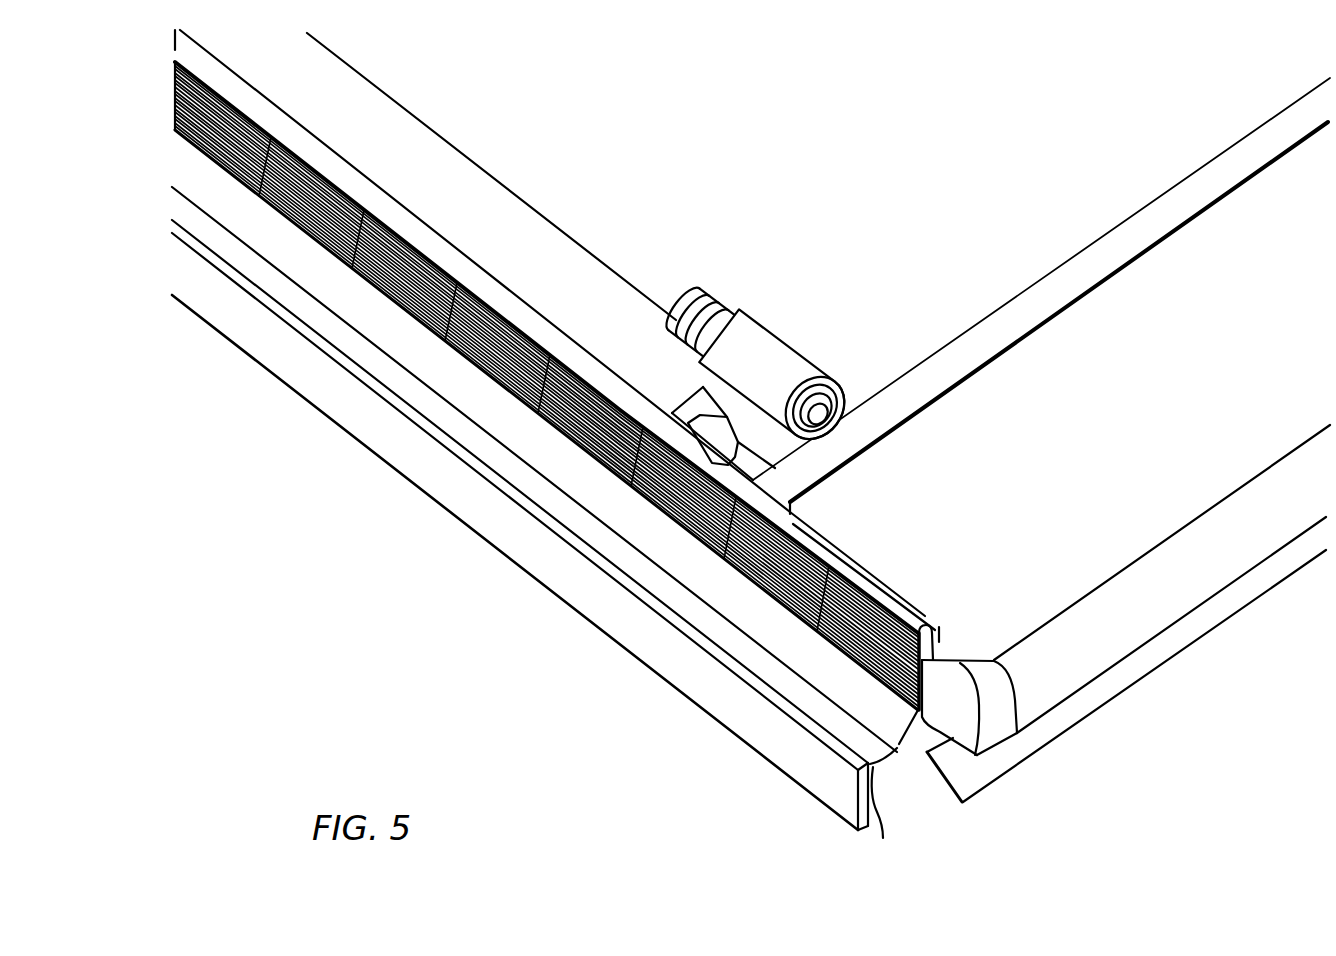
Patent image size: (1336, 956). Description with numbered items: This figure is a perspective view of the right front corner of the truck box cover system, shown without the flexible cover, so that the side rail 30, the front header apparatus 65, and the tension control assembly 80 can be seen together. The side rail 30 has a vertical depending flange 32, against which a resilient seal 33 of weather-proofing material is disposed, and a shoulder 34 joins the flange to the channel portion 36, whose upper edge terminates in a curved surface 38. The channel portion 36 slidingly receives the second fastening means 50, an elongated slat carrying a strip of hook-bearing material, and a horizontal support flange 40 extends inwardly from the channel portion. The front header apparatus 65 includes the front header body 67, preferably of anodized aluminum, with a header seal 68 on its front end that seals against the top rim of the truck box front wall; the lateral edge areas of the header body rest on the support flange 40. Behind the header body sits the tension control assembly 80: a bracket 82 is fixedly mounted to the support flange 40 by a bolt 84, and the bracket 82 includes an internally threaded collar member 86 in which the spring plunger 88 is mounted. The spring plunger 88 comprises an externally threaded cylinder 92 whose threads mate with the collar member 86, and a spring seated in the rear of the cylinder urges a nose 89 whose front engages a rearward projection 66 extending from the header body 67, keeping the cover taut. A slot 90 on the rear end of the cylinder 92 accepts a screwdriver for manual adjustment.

The side rail 30 is at (698, 730).
The vertical depending flange 32 is at (889, 836).
The seal 33 is at (818, 778).
The shoulder 34 is at (899, 745).
The channel portion 36 is at (858, 578).
The curved surface 38 is at (929, 628).
The horizontal support flange 40 is at (489, 176).
The second fastening means 50 is at (610, 475).
The front header apparatus 65 is at (1126, 210).
The rearward projection 66 is at (890, 387).
The front header body 67 is at (1086, 516).
The header seal 68 is at (1095, 712).
The tension control assembly 80 is at (775, 328).
The bracket 82 is at (695, 410).
The bolt 84 is at (713, 440).
The internally threaded collar member 86 is at (768, 322).
The spring plunger 88 is at (709, 288).
The nose 89 is at (853, 403).
The slot 90 is at (692, 303).
The externally threaded cylinder 92 is at (721, 307).